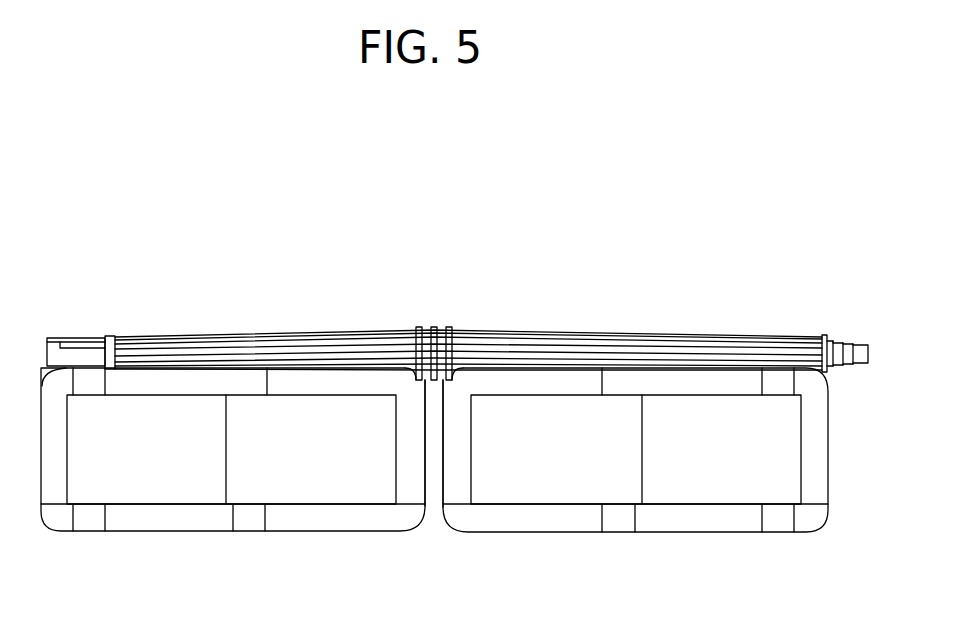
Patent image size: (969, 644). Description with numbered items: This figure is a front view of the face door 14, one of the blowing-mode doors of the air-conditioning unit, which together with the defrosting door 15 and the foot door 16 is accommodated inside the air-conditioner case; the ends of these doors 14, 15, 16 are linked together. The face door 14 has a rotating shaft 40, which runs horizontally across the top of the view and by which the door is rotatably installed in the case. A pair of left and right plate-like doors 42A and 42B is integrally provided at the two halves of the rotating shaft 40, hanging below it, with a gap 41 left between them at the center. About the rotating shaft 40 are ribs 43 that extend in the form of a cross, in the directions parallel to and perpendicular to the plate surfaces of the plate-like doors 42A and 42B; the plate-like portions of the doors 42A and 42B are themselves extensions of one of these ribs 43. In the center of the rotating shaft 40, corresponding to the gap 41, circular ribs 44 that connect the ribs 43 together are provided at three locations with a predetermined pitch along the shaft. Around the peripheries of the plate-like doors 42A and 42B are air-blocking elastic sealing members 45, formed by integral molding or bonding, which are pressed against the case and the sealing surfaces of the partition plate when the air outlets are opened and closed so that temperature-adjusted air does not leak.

The face door 14 is at (352, 268).
The defrosting door 15 is at (457, 307).
The foot door 16 is at (457, 307).
The rotating shaft 40 is at (604, 345).
The gap 41 is at (434, 500).
The plate-like door 42A is at (253, 490).
The plate-like door 42B is at (710, 488).
The ribs 43 is at (242, 358).
The circular ribs 44 is at (433, 325).
The elastic sealing members 45 is at (140, 520).